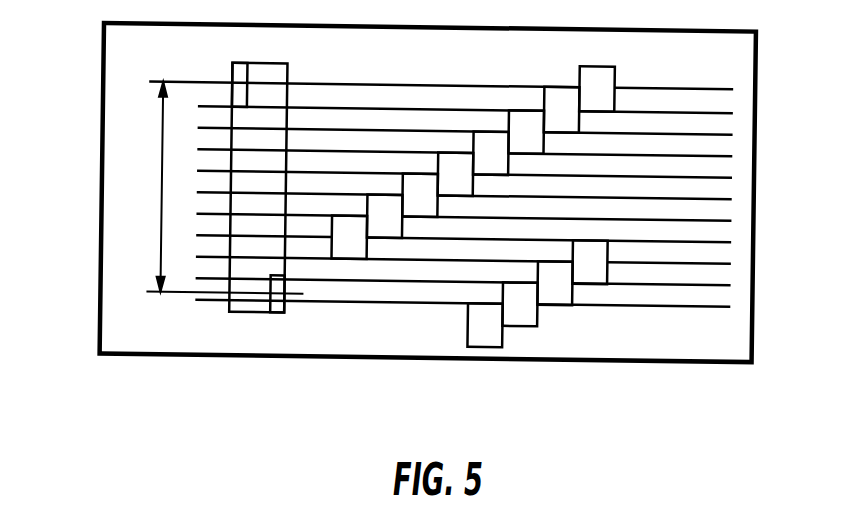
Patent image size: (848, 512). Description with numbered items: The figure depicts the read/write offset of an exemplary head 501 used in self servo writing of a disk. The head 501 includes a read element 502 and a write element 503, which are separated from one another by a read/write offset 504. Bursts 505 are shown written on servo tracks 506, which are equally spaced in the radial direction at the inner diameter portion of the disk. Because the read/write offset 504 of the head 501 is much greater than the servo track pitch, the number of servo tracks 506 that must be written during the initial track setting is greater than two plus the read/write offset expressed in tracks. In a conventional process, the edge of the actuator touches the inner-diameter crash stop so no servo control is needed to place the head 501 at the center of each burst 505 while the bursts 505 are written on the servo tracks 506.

The head 501 is at (271, 78).
The read element 502 is at (281, 308).
The write element 503 is at (233, 70).
The read/write offset 504 is at (164, 221).
The bursts 505 is at (524, 112).
The servo tracks 506 is at (711, 105).